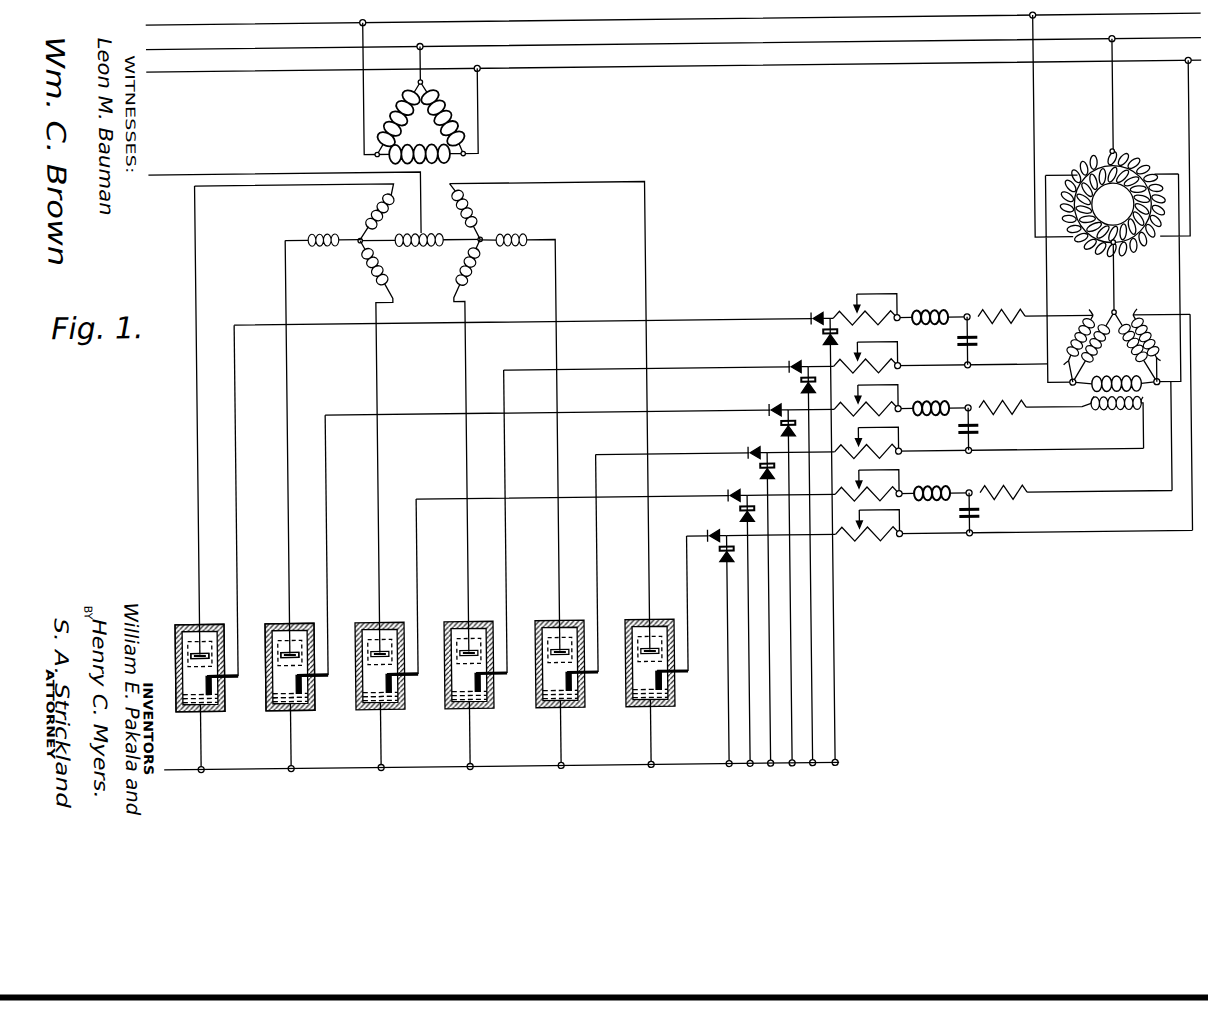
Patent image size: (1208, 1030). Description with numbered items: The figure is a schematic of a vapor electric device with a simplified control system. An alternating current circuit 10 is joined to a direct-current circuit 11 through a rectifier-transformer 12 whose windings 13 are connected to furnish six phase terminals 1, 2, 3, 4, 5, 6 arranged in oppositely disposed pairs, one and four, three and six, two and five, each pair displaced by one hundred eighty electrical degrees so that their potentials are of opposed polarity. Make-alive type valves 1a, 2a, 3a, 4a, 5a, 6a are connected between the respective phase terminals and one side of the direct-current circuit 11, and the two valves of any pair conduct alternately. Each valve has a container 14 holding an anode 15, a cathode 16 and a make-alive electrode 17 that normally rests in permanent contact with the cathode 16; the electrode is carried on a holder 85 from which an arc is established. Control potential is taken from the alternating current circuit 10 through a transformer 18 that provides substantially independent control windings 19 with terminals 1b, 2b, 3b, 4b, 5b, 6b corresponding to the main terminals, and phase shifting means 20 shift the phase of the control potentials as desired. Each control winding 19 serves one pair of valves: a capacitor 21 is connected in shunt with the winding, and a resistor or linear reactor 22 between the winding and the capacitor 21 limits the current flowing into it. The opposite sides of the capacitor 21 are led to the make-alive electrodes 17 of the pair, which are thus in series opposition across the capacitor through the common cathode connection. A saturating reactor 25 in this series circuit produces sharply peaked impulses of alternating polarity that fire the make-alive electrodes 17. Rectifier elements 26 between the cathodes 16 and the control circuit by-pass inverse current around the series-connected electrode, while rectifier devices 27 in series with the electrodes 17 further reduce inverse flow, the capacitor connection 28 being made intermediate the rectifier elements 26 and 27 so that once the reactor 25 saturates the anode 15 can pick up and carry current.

The alternating current circuit 10 is at (749, 68).
The direct-current circuit 11 is at (163, 170).
The rectifier-transformer 12 is at (522, 172).
The windings 13 is at (410, 231).
The phase terminal 1 is at (325, 423).
The phase terminal 2 is at (550, 401).
The phase terminal 3 is at (303, 404).
The phase terminal 4 is at (520, 419).
The phase terminal 5 is at (387, 431).
The phase terminal 6 is at (469, 430).
The make-alive type valve 1a is at (284, 614).
The make-alive type valve 2a is at (644, 614).
The make-alive type valve 3a is at (194, 614).
The make-alive type valve 4a is at (554, 614).
The make-alive type valve 5a is at (374, 614).
The make-alive type valve 6a is at (463, 614).
The container 14 is at (173, 658).
The anode 15 is at (209, 647).
The cathode 16 is at (282, 708).
The make-alive electrode 17 is at (216, 686).
The holder 85 is at (652, 686).
The transformer 18 is at (1126, 372).
The control windings 19 is at (1182, 345).
The phase shifting means 20 is at (1126, 219).
The control winding terminal 1b is at (1086, 412).
The control winding terminal 2b is at (1140, 304).
The control winding terminal 3b is at (1096, 304).
The control winding terminal 4b is at (1156, 408).
The control winding terminal 5b is at (1169, 368).
The control winding terminal 6b is at (1062, 372).
The capacitor 21 is at (981, 347).
The resistor or linear reactor 22 is at (1008, 395).
The saturating reactor 25 is at (931, 394).
The rectifier element 26 is at (740, 512).
The rectifier device 27 is at (729, 488).
The capacitor connection 28 is at (833, 315).